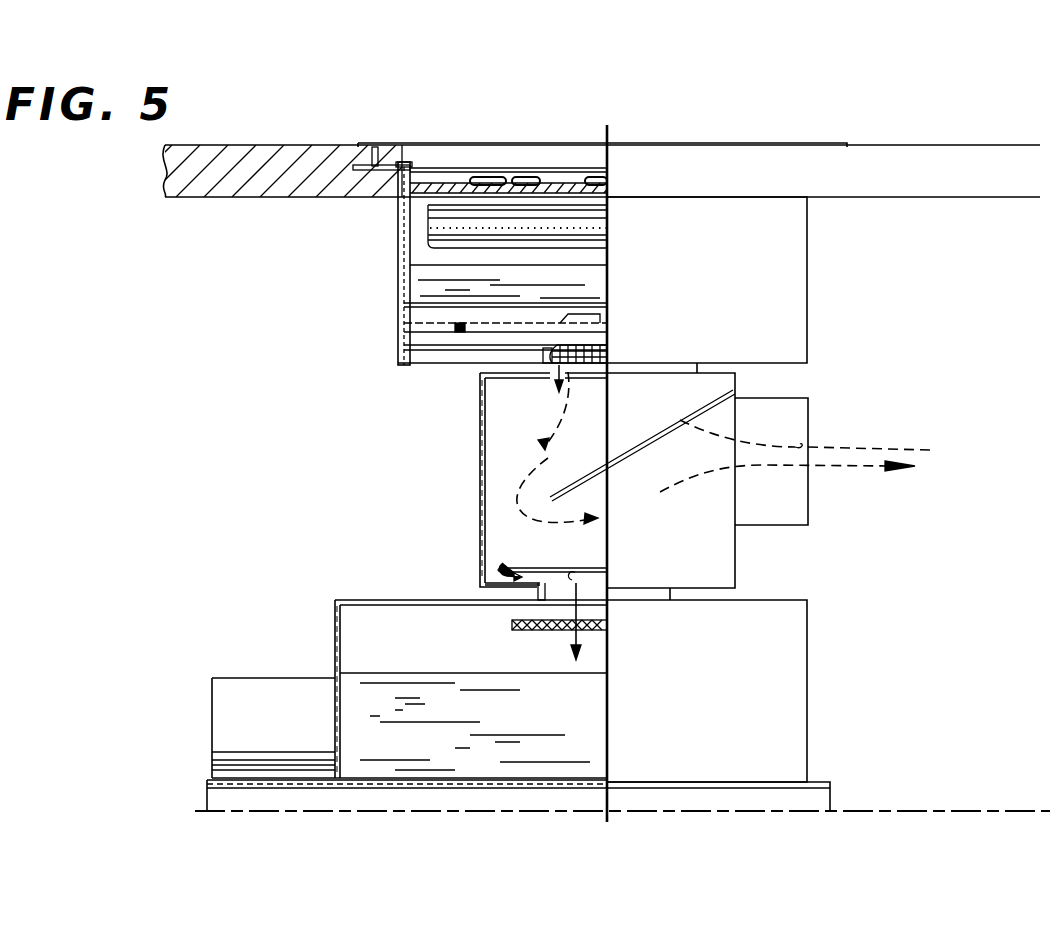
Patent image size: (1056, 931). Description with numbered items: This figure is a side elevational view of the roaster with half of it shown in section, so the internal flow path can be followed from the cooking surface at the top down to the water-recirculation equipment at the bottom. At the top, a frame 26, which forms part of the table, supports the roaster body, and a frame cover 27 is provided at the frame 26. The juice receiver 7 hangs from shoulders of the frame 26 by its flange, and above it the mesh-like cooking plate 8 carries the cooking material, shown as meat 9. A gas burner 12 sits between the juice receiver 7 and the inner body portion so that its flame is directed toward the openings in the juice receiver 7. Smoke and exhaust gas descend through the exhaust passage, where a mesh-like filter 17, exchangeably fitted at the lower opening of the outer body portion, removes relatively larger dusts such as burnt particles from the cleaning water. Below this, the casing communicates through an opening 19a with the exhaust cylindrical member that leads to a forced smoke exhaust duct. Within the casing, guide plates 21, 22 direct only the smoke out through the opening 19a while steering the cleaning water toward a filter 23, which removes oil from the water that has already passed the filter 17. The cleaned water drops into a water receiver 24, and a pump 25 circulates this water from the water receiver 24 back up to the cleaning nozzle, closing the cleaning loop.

The juice receiver 7 is at (420, 217).
The mesh-like cooking plate 8 is at (548, 184).
The meat 9 is at (518, 182).
The gas burner 12 is at (462, 236).
The mesh-like filter 17 is at (606, 352).
The opening 19a is at (798, 415).
The guide plate 21 is at (814, 456).
The guide plate 22 is at (577, 573).
The filter 23 is at (511, 622).
The water receiver 24 is at (363, 641).
The pump 25 is at (265, 688).
The frame 26 is at (357, 145).
The frame cover 27 is at (388, 147).